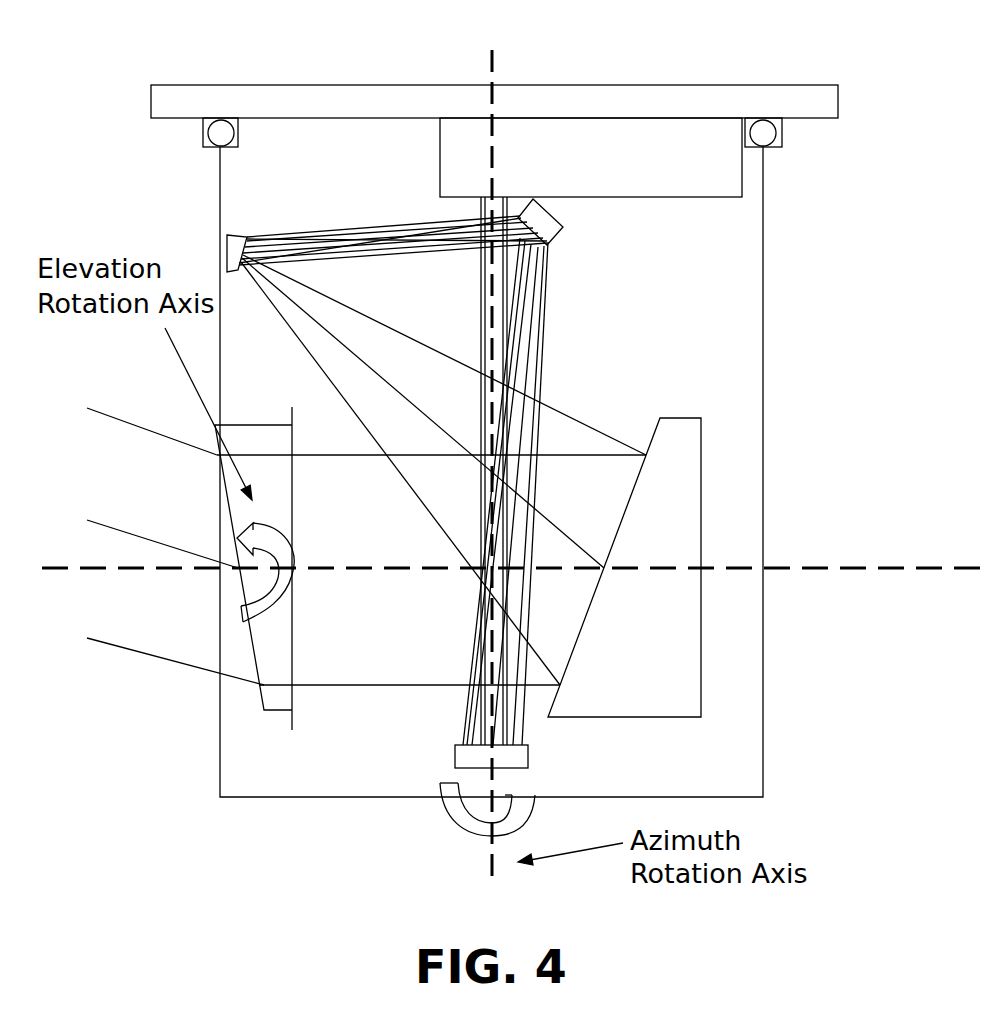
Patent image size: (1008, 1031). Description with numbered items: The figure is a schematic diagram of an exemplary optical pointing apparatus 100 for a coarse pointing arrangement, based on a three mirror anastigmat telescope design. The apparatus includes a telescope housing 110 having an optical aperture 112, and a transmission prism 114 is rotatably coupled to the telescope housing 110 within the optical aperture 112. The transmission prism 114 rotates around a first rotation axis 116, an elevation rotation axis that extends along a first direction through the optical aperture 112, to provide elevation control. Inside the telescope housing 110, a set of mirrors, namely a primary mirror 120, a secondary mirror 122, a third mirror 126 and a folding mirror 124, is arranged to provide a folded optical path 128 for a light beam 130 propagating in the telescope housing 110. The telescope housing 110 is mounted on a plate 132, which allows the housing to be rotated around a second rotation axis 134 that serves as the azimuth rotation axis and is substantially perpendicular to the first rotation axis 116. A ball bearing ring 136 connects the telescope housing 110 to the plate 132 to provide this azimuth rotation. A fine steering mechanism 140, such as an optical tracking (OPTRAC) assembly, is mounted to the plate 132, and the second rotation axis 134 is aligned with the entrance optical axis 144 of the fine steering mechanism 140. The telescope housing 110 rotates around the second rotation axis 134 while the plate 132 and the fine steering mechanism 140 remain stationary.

The optical pointing apparatus 100 is at (830, 364).
The telescope housing 110 is at (763, 677).
The optical aperture 112 is at (220, 647).
The transmission prism 114 is at (243, 423).
The first rotation axis 116 is at (413, 568).
The primary mirror 120 is at (615, 697).
The secondary mirror 122 is at (240, 235).
The folding mirror 124 is at (562, 230).
The third mirror 126 is at (455, 758).
The folded optical path 128 is at (382, 253).
The light beam 130 is at (162, 433).
The plate 132 is at (253, 84).
The second rotation axis 134 is at (488, 855).
The ball bearing ring 136 is at (221, 133).
The fine steering mechanism 140 is at (672, 187).
The entrance optical axis 144 is at (488, 63).